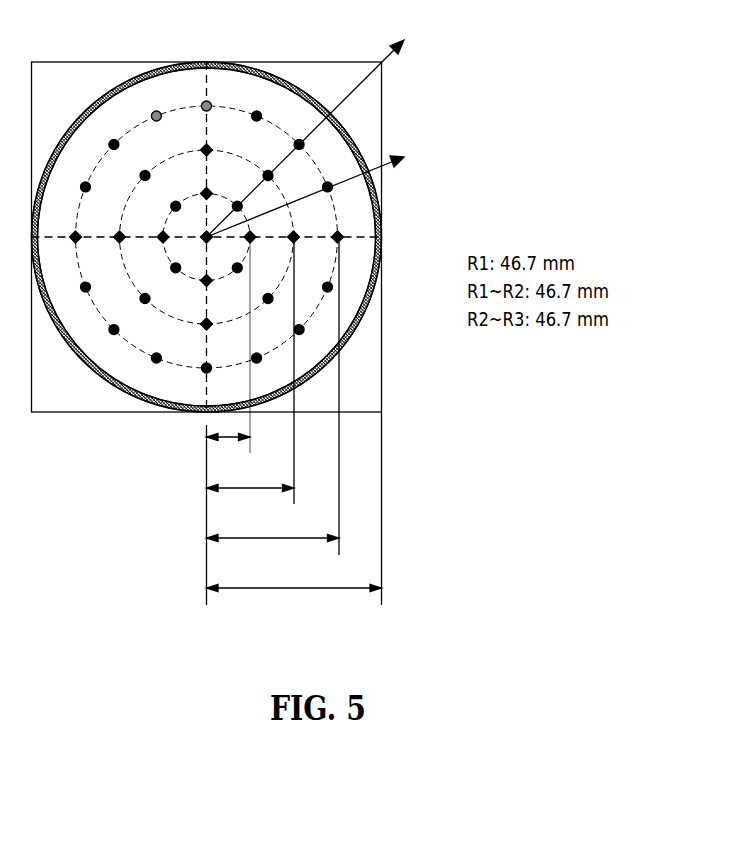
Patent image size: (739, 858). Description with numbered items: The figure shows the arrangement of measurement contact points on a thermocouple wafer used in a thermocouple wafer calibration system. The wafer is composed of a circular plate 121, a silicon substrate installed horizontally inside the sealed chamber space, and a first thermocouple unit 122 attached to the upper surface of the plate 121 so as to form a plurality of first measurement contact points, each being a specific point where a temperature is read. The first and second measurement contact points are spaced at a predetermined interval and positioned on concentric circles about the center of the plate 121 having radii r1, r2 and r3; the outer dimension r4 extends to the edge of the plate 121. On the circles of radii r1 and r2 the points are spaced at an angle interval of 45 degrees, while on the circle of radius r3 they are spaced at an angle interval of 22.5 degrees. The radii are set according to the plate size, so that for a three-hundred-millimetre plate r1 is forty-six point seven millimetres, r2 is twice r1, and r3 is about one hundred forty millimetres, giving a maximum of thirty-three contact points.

The plate 121 is at (127, 363).
The first thermocouple unit 122 is at (206, 148).
The 45 degree direction 45 is at (340, 131).
The 22.5 degree direction 22.5 is at (348, 191).
The radius r1 is at (229, 351).
The radius r2 is at (251, 376).
The radius r3 is at (273, 401).
The radius r4 is at (294, 514).